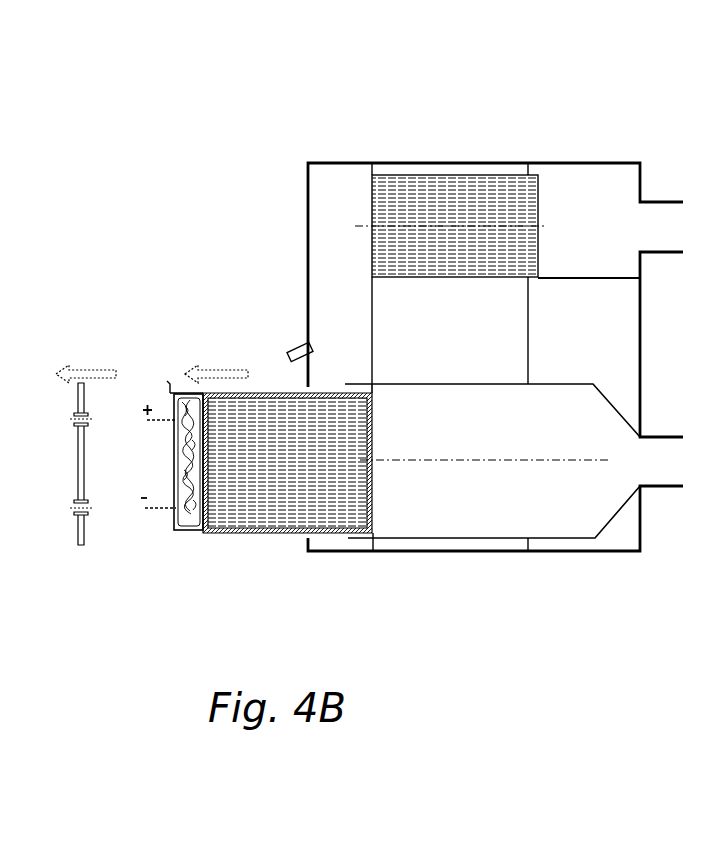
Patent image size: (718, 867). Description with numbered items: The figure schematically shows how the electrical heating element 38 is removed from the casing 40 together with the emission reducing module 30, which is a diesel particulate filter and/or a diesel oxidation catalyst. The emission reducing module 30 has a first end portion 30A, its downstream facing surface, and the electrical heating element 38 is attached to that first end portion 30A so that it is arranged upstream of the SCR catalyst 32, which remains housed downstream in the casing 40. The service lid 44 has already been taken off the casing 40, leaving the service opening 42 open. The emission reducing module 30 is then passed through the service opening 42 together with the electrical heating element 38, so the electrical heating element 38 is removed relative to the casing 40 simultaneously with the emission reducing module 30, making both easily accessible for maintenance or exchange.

The emission reducing module 30 is at (283, 527).
The first end portion 30A is at (197, 533).
The SCR catalyst 32 is at (455, 185).
The electrical heating element 38 is at (172, 545).
The casing 40 is at (400, 551).
The service opening 42 is at (284, 372).
The service lid 44 is at (81, 383).